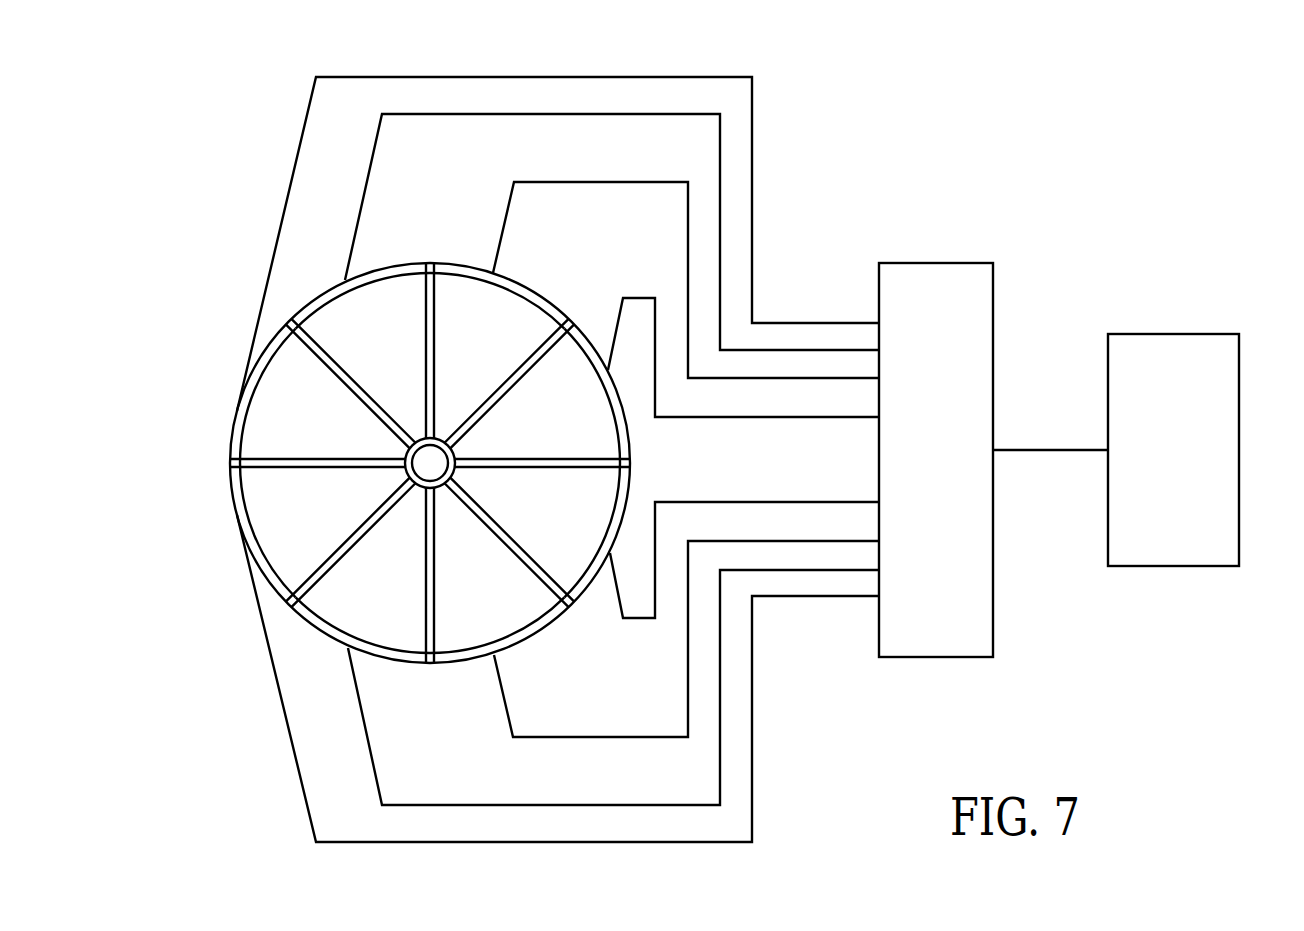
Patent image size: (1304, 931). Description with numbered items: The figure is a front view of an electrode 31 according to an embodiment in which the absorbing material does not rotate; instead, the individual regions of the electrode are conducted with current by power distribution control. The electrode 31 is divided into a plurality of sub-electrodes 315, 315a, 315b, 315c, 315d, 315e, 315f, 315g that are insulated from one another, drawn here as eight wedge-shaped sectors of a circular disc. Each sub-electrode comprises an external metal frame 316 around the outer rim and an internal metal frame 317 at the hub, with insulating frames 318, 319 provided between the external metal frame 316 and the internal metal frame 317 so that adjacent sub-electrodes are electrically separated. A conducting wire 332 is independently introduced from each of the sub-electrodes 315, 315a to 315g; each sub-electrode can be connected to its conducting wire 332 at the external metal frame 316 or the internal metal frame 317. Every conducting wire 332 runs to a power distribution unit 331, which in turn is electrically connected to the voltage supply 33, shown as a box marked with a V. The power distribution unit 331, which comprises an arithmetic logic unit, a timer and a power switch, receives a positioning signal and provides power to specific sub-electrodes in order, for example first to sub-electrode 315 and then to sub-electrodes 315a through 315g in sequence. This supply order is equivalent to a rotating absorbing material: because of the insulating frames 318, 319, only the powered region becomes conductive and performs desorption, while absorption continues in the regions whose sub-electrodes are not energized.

The electrode 31 is at (222, 402).
The sub-electrode 315 is at (310, 401).
The sub-electrode 315a is at (393, 329).
The sub-electrode 315b is at (506, 343).
The sub-electrode 315c is at (589, 421).
The sub-electrode 315d is at (578, 529).
The sub-electrode 315e is at (503, 617).
The sub-electrode 315f is at (391, 617).
The sub-electrode 315g is at (326, 531).
The external metal frame 316 is at (236, 446).
The internal metal frame 317 is at (406, 457).
The insulating frame 318 is at (310, 461).
The insulating frame 319 is at (368, 401).
The power distribution unit 331 is at (968, 265).
The conducting wire 332 is at (706, 78).
The voltage supply 33 is at (1229, 342).